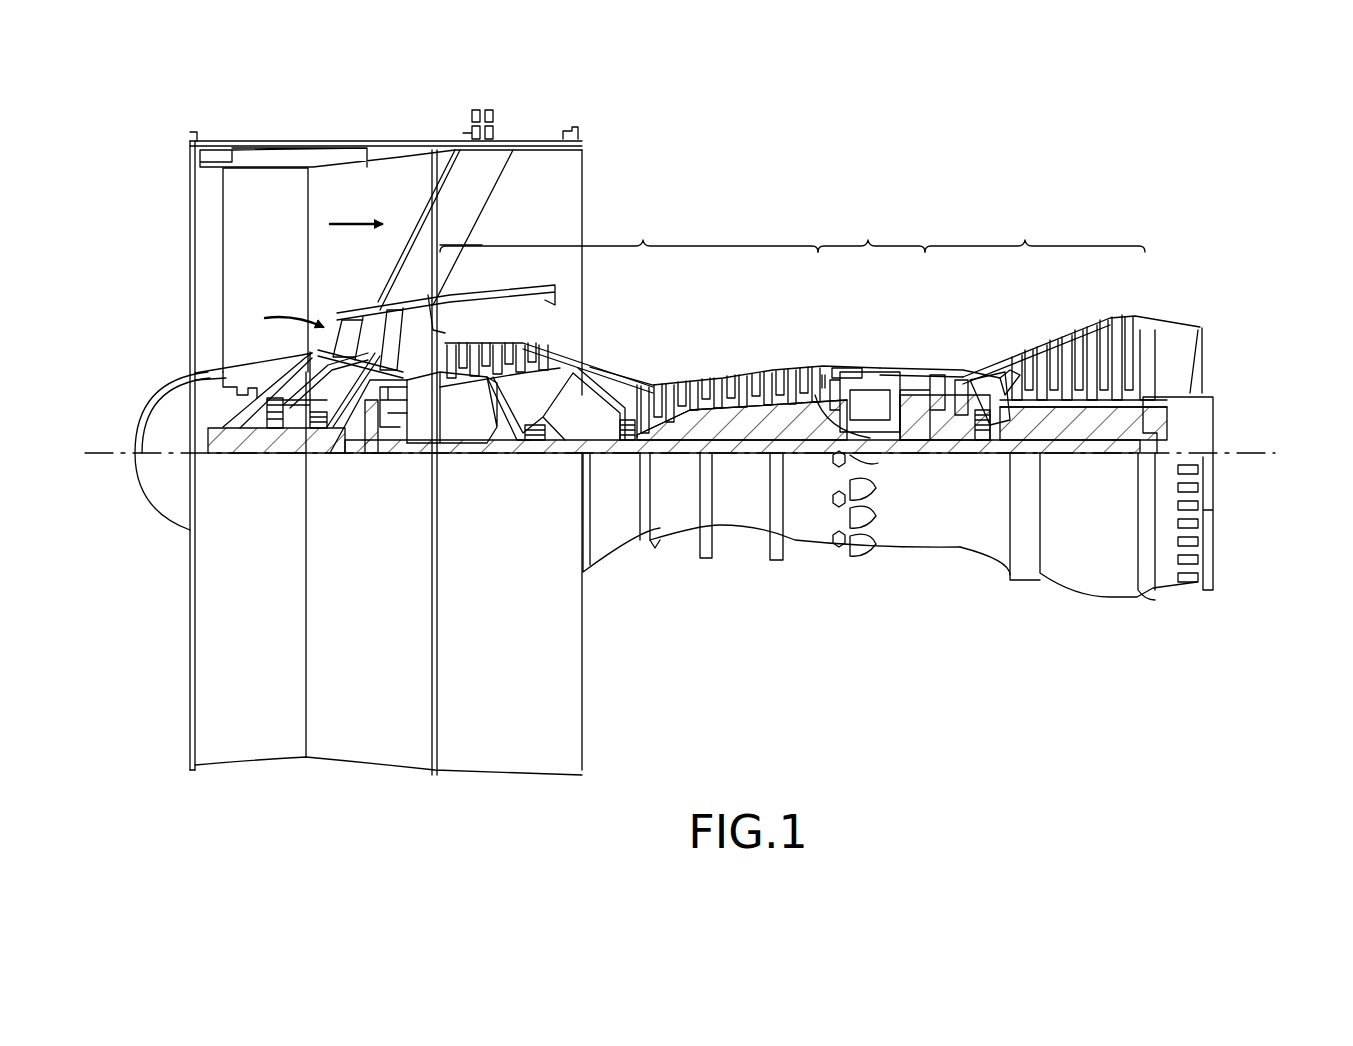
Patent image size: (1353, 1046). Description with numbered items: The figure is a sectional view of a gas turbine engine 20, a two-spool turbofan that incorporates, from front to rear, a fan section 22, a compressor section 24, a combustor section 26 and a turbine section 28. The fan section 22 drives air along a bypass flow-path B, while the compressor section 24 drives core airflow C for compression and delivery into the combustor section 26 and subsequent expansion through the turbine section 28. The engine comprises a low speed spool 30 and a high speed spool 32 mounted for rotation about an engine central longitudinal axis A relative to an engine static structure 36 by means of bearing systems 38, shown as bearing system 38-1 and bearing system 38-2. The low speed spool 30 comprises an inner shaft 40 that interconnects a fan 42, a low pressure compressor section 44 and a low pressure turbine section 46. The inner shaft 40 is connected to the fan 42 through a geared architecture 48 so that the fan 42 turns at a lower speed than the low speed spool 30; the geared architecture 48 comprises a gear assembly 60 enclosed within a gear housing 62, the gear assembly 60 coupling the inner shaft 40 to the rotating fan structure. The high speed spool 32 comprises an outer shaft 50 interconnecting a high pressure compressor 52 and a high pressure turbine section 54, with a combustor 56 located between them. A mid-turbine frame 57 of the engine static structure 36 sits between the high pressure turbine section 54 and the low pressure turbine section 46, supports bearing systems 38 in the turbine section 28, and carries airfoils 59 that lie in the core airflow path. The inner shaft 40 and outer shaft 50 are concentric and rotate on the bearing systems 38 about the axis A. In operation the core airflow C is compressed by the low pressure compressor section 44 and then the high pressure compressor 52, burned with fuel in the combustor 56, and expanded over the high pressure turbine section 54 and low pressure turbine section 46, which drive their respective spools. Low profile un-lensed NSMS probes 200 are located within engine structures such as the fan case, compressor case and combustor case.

The gas turbine engine 20 is at (930, 182).
The fan section 22 is at (436, 116).
The compressor section 24 is at (629, 231).
The combustor section 26 is at (871, 231).
The turbine section 28 is at (1035, 231).
The low speed spool 30 is at (754, 484).
The high speed spool 32 is at (788, 415).
The engine static structure 36 is at (175, 772).
The bearing system 38 is at (990, 430).
The bearing system 38-1 is at (270, 453).
The bearing system 38-2 is at (535, 440).
The inner shaft 40 is at (610, 470).
The fan 42 is at (358, 458).
The low pressure compressor section 44 is at (565, 331).
The low pressure turbine section 46 is at (1073, 340).
The geared architecture 48 is at (400, 470).
The outer shaft 50 is at (866, 452).
The high pressure compressor 52 is at (750, 385).
The high pressure turbine section 54 is at (944, 366).
The combustor 56 is at (878, 388).
The mid-turbine frame 57 is at (986, 368).
The airfoils 59 is at (994, 380).
The gear assembly 60 is at (406, 432).
The gear housing 62 is at (405, 400).
The low profile un-lensed NSMS probe 200 is at (463, 334).
The engine central longitudinal axis A is at (680, 421).
The bypass flow-path B is at (355, 228).
The core airflow C is at (283, 322).